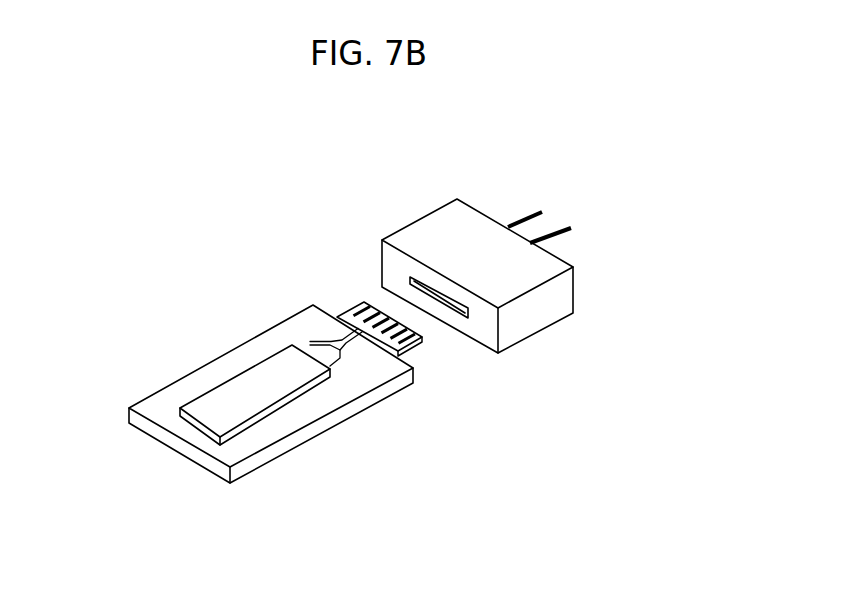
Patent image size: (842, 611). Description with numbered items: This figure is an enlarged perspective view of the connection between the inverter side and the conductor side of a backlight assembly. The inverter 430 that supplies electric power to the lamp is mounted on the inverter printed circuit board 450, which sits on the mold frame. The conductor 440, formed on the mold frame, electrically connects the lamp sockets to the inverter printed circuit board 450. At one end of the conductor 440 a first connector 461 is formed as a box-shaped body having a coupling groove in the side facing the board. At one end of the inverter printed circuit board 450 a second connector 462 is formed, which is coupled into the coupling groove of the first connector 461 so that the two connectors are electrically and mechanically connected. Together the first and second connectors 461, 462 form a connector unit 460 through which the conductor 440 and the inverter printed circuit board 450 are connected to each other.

The inverter 430 is at (253, 380).
The conductor 440 is at (558, 223).
The inverter printed circuit board 450 is at (180, 393).
The connector unit 460 is at (515, 325).
The first connector 461 is at (530, 320).
The second connector 462 is at (395, 344).